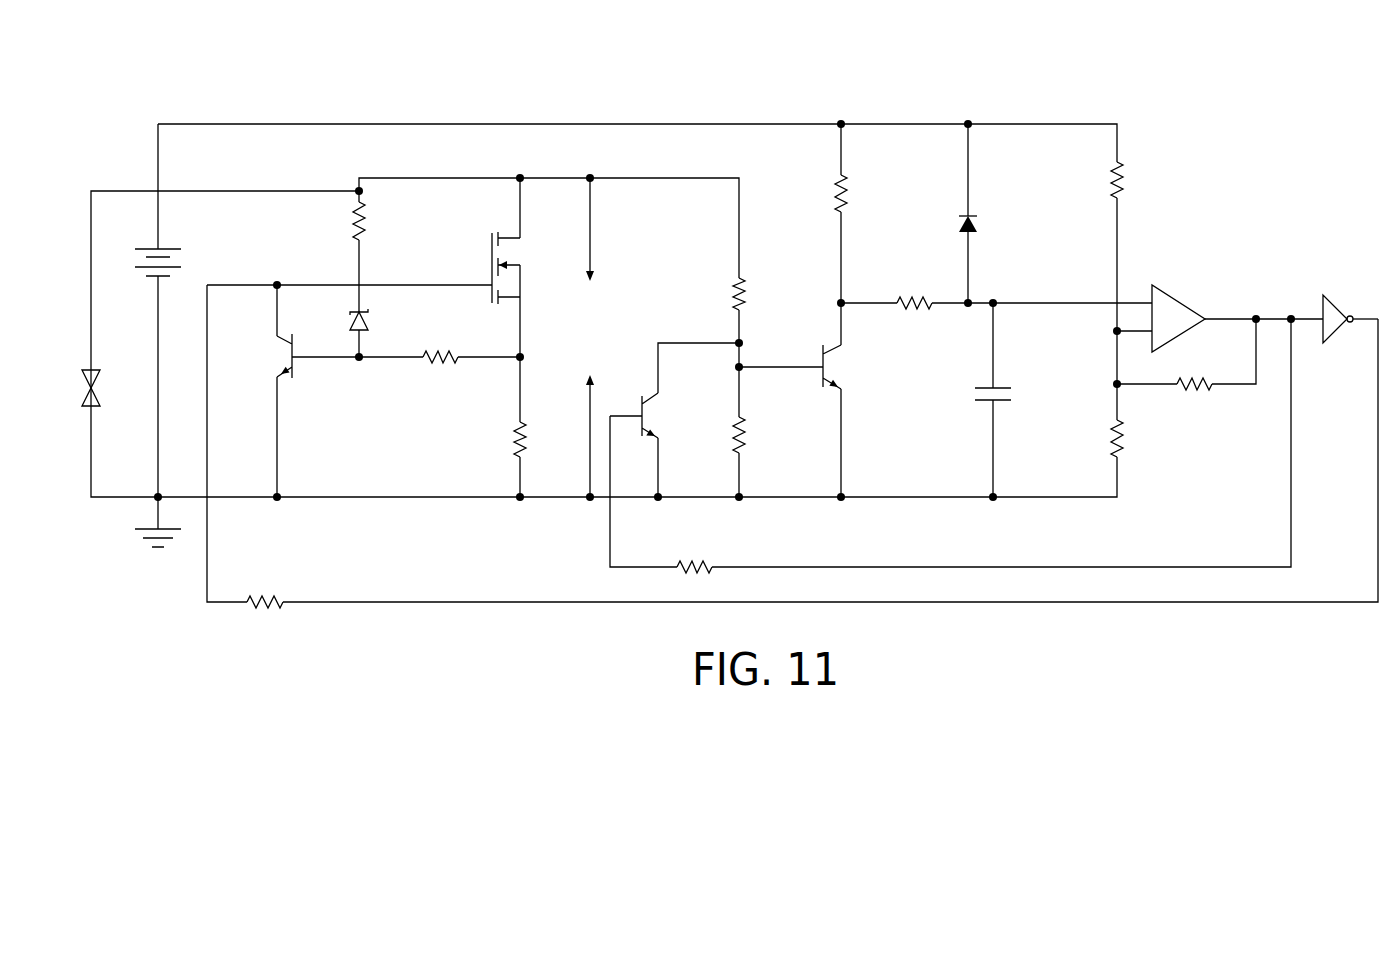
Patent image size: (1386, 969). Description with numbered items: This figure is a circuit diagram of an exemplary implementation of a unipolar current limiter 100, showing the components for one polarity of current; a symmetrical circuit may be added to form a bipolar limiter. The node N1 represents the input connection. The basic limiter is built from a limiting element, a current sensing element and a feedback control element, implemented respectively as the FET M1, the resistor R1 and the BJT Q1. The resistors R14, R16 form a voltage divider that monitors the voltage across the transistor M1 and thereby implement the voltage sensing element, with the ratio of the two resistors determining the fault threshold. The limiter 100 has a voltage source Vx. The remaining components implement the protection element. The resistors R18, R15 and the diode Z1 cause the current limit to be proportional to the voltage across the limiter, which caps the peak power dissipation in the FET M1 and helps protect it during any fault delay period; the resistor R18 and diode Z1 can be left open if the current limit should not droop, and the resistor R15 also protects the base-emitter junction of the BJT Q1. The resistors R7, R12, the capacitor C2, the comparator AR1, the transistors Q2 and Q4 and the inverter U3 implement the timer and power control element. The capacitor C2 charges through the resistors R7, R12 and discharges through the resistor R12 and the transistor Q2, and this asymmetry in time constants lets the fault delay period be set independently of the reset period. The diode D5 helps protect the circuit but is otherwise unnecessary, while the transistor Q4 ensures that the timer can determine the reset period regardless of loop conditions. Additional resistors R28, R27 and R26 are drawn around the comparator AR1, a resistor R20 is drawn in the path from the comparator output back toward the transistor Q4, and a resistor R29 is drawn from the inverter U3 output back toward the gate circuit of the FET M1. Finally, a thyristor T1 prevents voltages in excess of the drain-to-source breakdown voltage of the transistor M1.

The current limiter 100 is at (1126, 68).
The voltage source Vx is at (169, 262).
The thyristor T1 is at (107, 388).
The resistor R18 is at (376, 221).
The diode Z1 is at (376, 320).
The BJT Q1 is at (274, 356).
The resistor R15 is at (440, 348).
The resistor R1 is at (500, 439).
The FET M1 is at (518, 268).
The node N1 is at (619, 178).
The resistor R14 is at (759, 294).
The resistor R16 is at (758, 435).
The transistor Q4 is at (661, 415).
The transistor Q2 is at (840, 367).
The resistor R7 is at (853, 193).
The resistor R12 is at (914, 294).
The diode D5 is at (980, 225).
The capacitor C2 is at (1006, 398).
The resistor R28 is at (1136, 180).
The resistor R27 is at (1137, 438).
The resistor R26 is at (1194, 376).
The comparator AR1 is at (1185, 318).
The inverter U3 is at (1347, 319).
The resistor R20 is at (694, 558).
The resistor R29 is at (266, 593).